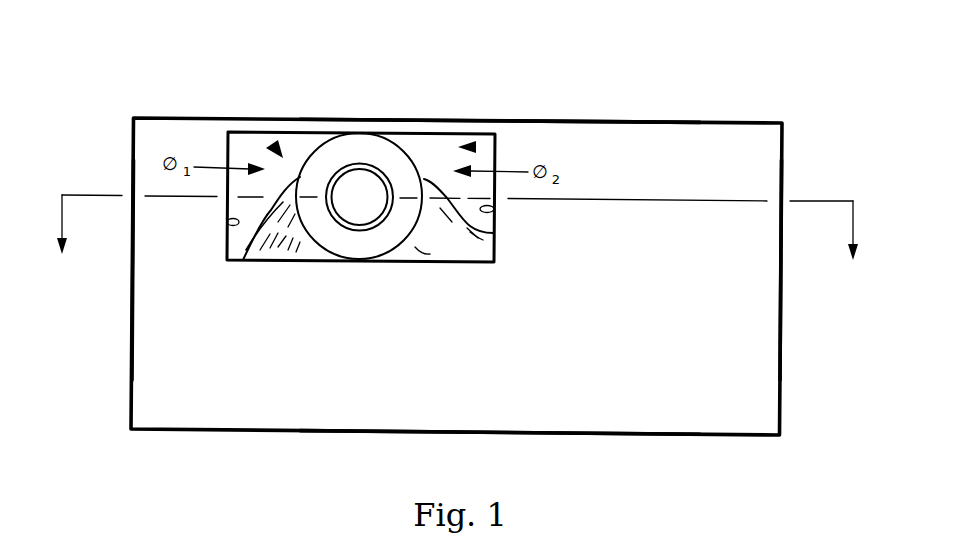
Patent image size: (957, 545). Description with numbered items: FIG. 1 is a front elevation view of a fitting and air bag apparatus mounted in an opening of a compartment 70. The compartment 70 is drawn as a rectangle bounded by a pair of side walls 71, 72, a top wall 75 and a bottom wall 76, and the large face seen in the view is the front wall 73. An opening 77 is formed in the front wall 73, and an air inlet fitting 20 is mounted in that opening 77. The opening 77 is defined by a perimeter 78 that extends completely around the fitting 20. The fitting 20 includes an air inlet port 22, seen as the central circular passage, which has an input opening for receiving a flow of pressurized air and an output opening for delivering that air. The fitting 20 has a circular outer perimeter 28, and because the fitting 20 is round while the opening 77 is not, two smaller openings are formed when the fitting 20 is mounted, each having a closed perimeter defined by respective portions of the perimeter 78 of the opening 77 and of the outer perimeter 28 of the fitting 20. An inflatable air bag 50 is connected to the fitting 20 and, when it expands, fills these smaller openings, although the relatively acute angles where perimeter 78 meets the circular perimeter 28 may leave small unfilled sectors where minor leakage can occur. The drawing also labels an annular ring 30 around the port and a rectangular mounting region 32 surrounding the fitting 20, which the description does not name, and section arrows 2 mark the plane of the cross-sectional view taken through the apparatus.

The compartment 70 is at (756, 91).
The side wall 71 is at (131, 352).
The side wall 72 is at (781, 372).
The front wall 73 is at (603, 347).
The top wall 75 is at (645, 121).
The bottom wall 76 is at (665, 437).
The opening 77 is at (274, 150).
The perimeter 78 is at (228, 220).
The air inlet fitting 20 is at (388, 152).
The air inlet port 22 is at (377, 217).
The outer perimeter 28 is at (303, 256).
The annular ring 30 is at (359, 133).
The mounting region 32 is at (360, 262).
The inflatable air bag 50 is at (245, 262).
The section line for FIG. 2 is at (455, 242).